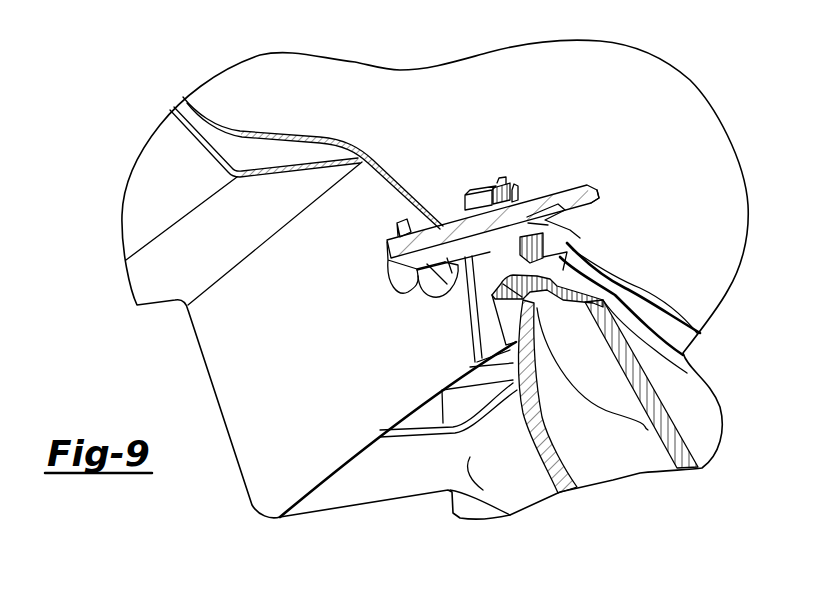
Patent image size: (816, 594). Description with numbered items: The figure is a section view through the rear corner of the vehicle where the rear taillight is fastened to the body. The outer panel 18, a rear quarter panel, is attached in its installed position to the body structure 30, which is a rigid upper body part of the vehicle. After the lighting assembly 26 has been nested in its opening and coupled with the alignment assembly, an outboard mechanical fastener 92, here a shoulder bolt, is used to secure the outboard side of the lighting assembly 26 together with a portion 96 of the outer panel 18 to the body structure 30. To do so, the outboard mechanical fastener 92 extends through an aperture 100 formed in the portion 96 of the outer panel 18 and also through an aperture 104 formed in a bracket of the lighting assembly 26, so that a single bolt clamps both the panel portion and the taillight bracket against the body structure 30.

The outer panel 18 is at (157, 187).
The lighting assembly 26 is at (553, 487).
The body structure 30 is at (568, 236).
The outboard mechanical fastener 92 is at (397, 260).
The portion of the outer panel 96 is at (502, 262).
The aperture 100 is at (443, 227).
The aperture 104 is at (512, 222).